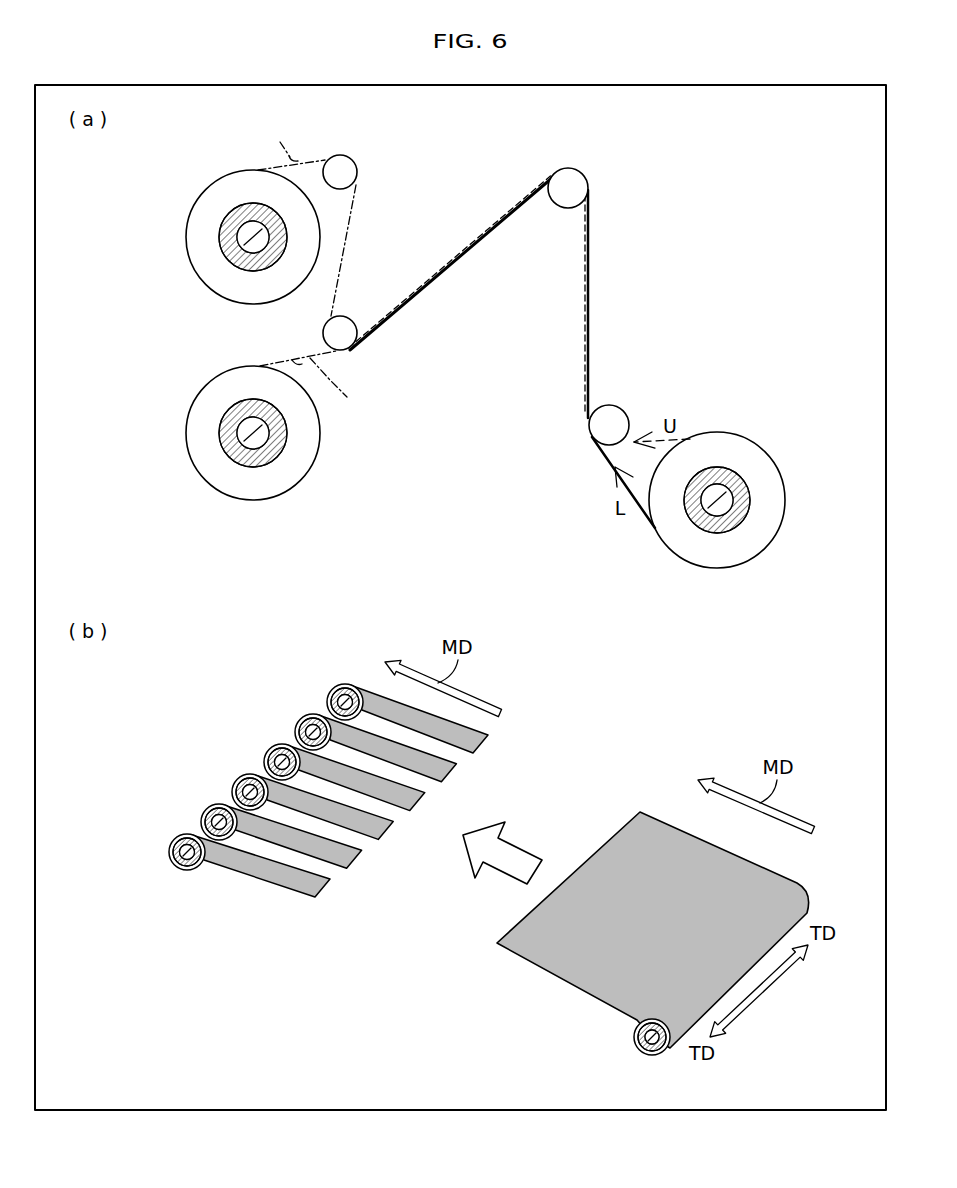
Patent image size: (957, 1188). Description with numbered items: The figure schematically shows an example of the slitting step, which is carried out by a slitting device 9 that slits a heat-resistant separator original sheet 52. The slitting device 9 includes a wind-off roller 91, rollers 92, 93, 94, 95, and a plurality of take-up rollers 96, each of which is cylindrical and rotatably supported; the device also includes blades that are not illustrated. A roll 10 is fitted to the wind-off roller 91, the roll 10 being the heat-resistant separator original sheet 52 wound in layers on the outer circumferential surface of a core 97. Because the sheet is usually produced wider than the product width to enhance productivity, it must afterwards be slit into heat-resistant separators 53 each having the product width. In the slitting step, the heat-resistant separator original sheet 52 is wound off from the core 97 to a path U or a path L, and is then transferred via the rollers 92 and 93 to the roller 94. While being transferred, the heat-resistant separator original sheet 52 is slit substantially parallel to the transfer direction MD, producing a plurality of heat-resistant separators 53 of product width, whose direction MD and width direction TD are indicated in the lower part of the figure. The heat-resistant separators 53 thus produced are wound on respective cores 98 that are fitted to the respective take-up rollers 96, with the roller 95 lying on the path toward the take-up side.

The slitting device 9 is at (762, 145).
The roll 10 is at (790, 450).
The heat-resistant separator original sheet 52 is at (588, 283).
The heat-resistant separator 53 is at (339, 909).
The wind-off roller 91 is at (700, 512).
The roller 92 is at (615, 406).
The roller 93 is at (586, 181).
The roller 94 is at (347, 345).
The roller 95 is at (350, 162).
The take-up roller 96 is at (243, 250).
The core 97 is at (750, 514).
The core 98 is at (221, 231).